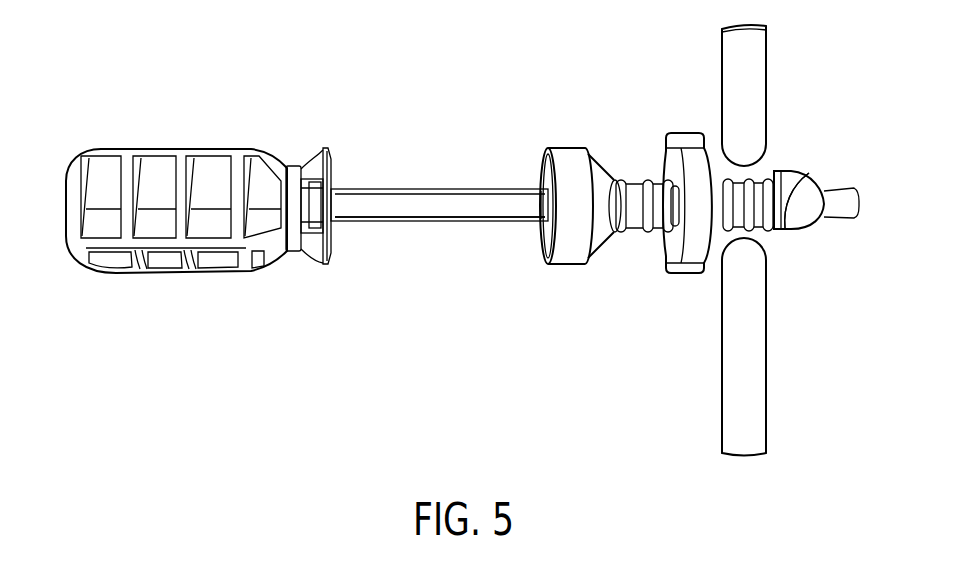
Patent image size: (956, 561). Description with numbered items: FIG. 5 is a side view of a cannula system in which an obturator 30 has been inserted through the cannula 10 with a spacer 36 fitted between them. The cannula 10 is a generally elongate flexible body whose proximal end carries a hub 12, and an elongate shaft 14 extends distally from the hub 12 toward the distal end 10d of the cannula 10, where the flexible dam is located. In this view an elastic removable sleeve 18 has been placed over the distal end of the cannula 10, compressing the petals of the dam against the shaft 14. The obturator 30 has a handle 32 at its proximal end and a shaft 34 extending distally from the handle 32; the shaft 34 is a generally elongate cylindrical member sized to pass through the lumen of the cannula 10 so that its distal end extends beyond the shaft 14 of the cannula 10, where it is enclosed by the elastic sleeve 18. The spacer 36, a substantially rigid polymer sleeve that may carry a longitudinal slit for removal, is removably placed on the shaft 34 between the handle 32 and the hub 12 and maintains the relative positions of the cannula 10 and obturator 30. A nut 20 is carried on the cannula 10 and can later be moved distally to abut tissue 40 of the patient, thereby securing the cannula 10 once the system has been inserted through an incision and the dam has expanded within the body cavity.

The cannula 10 is at (633, 313).
The distal end of the cannula 10d is at (810, 177).
The hub 12 is at (562, 265).
The elongate shaft 14 is at (623, 172).
The removable sleeve 18 is at (803, 228).
The nut 20 is at (683, 130).
The obturator 30 is at (157, 323).
The handle 32 is at (162, 148).
The obturator shaft 34 is at (436, 203).
The spacer 36 is at (398, 220).
The tissue 40 is at (770, 103).